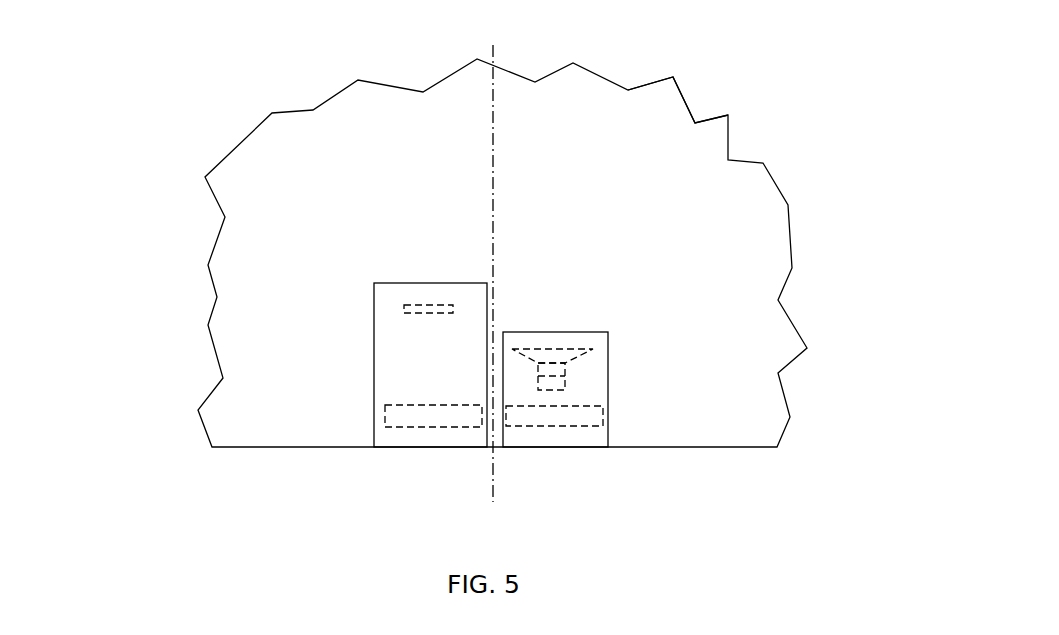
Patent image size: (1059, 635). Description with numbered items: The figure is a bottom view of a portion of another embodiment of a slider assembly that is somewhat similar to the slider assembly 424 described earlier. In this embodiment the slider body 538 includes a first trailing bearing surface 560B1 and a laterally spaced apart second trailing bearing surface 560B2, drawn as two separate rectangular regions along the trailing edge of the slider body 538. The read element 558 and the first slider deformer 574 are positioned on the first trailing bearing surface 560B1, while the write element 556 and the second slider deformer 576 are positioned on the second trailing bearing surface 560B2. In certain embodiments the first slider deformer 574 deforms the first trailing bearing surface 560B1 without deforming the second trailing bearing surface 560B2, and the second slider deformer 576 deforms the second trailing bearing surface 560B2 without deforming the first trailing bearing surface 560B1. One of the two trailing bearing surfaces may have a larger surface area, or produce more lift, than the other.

The slider assembly 424 is at (789, 143).
The slider body 538 is at (662, 120).
The write element 556 is at (562, 387).
The read element 558 is at (412, 303).
The first trailing bearing surface 560B1 is at (402, 437).
The second trailing bearing surface 560B2 is at (578, 438).
The first slider deformer 574 is at (400, 418).
The second slider deformer 576 is at (515, 408).